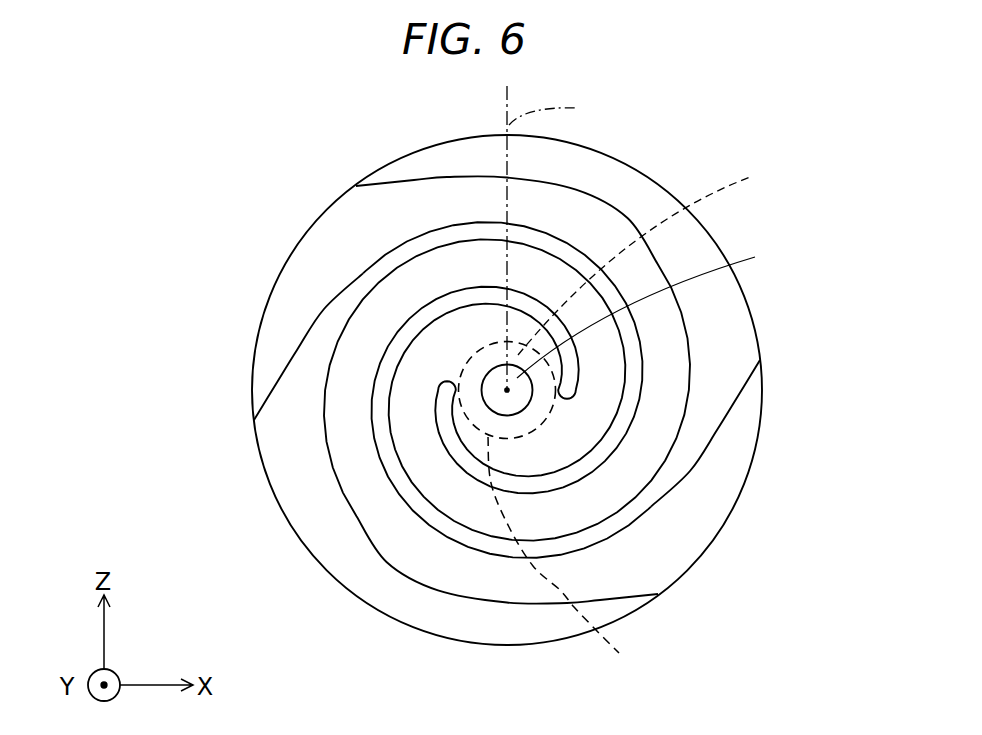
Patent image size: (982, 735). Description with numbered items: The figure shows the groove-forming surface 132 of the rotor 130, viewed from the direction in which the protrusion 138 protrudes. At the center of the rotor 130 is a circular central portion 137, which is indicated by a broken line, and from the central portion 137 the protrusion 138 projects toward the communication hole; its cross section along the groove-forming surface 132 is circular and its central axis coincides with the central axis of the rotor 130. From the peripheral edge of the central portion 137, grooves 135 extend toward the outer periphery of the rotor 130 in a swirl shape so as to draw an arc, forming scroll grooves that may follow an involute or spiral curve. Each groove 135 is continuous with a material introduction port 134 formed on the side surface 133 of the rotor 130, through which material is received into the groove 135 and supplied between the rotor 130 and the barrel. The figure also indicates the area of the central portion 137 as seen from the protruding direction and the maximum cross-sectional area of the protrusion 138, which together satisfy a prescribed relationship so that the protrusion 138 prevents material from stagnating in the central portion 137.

The rotor 130 is at (232, 182).
The groove-forming surface 132 is at (305, 145).
The side surface 133 is at (394, 620).
The material introduction port 134 is at (282, 270).
The groove 135 is at (462, 288).
The central portion 137 is at (574, 560).
The protrusion 138 is at (522, 387).